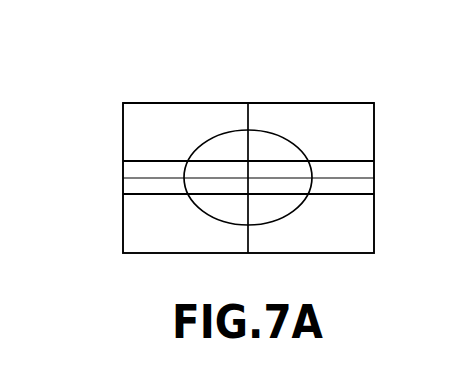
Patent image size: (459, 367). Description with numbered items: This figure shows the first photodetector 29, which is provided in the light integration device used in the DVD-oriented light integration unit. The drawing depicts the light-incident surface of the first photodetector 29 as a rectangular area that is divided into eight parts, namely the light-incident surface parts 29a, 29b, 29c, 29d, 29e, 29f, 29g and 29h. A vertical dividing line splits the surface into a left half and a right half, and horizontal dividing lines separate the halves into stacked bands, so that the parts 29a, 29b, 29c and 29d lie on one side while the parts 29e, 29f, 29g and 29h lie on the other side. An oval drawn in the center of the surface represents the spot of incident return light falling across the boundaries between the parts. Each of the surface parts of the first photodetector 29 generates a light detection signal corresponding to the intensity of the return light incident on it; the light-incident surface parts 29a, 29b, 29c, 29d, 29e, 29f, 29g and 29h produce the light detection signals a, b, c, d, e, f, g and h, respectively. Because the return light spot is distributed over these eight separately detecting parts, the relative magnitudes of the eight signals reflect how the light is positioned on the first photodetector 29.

The first photodetector 29 is at (321, 93).
The light-incident surface part 29a is at (130, 130).
The light-incident surface part 29b is at (130, 167).
The light-incident surface part 29c is at (130, 185).
The light-incident surface part 29d is at (136, 218).
The light-incident surface part 29e is at (367, 128).
The light-incident surface part 29f is at (367, 162).
The light-incident surface part 29g is at (367, 183).
The light-incident surface part 29h is at (367, 226).